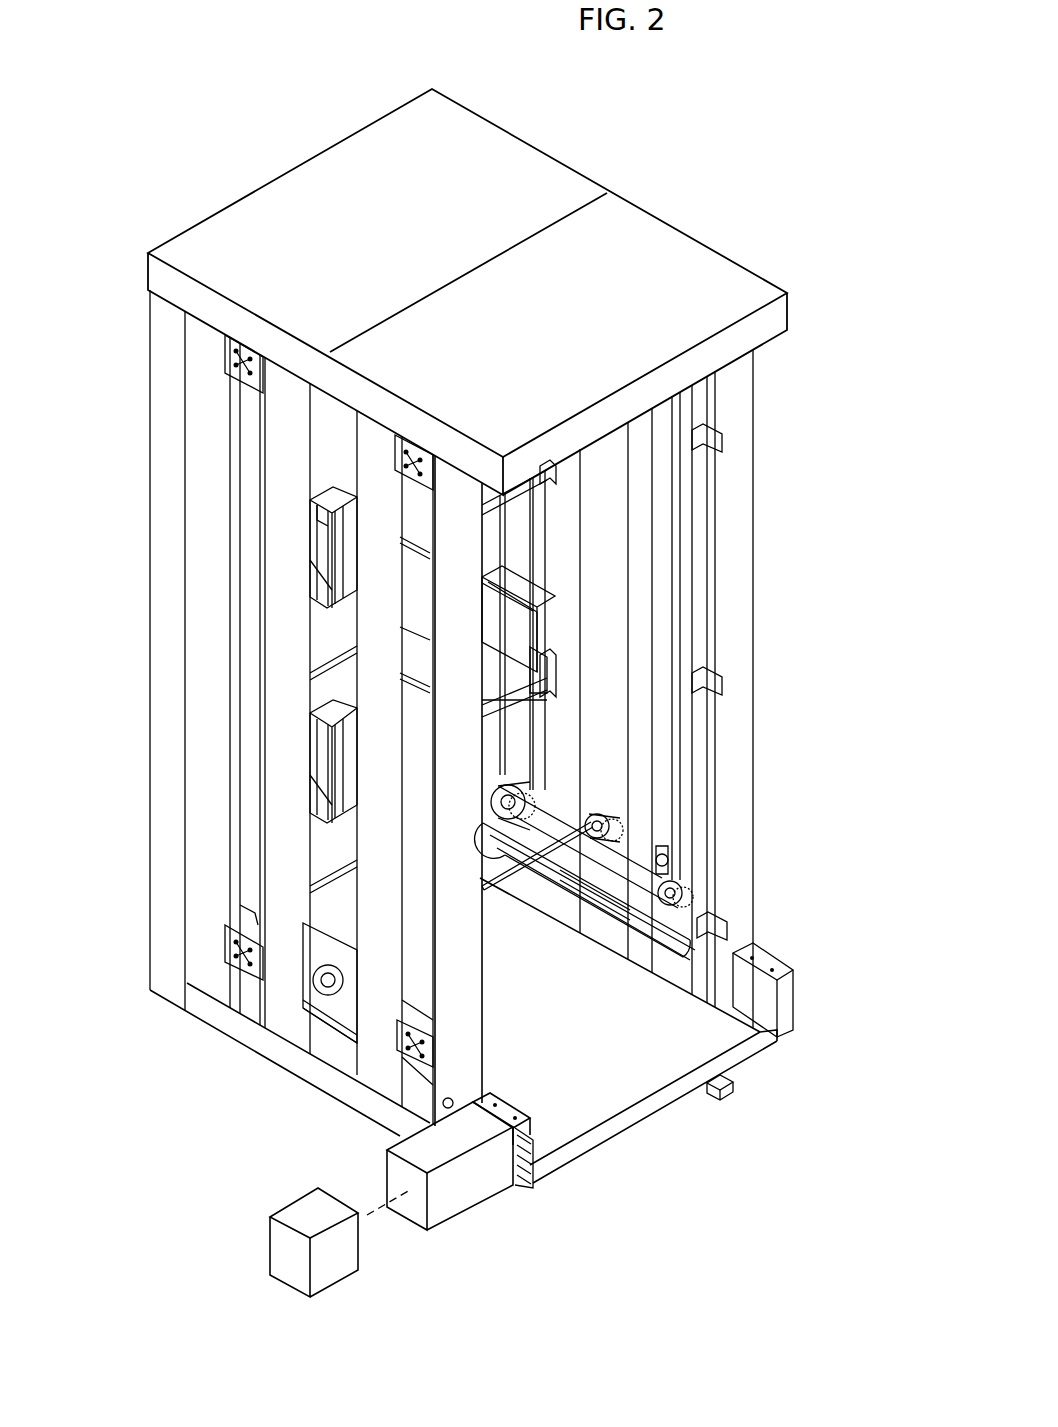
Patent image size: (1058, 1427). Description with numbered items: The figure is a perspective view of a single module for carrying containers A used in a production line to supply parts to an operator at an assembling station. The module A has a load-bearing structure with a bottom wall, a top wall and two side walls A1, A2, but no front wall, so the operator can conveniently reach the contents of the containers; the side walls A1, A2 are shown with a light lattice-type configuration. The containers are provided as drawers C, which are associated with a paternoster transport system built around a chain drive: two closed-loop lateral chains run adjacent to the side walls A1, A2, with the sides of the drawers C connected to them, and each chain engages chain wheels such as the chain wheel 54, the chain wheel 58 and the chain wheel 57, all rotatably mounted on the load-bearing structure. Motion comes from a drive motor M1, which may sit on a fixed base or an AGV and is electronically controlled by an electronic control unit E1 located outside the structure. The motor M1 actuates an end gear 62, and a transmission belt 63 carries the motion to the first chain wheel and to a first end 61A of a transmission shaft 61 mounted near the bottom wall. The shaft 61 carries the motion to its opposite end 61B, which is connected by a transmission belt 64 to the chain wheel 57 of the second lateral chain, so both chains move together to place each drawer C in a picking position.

The module for carrying containers A is at (262, 129).
The side wall A1 is at (146, 440).
The side wall A2 is at (760, 460).
The drawer C is at (332, 493).
The chain wheel 54 is at (250, 918).
The chain wheel 57 is at (674, 892).
The chain wheel 58 is at (512, 790).
The transmission shaft 61 is at (505, 884).
The first end of the transmission shaft 61A is at (323, 980).
The opposite end of the transmission shaft 61B is at (598, 822).
The end gear 62 is at (530, 1152).
The transmission belt 63 is at (412, 1012).
The transmission belt 64 is at (664, 857).
The drive motor M1 is at (463, 1202).
The electronic control unit E1 is at (280, 1243).